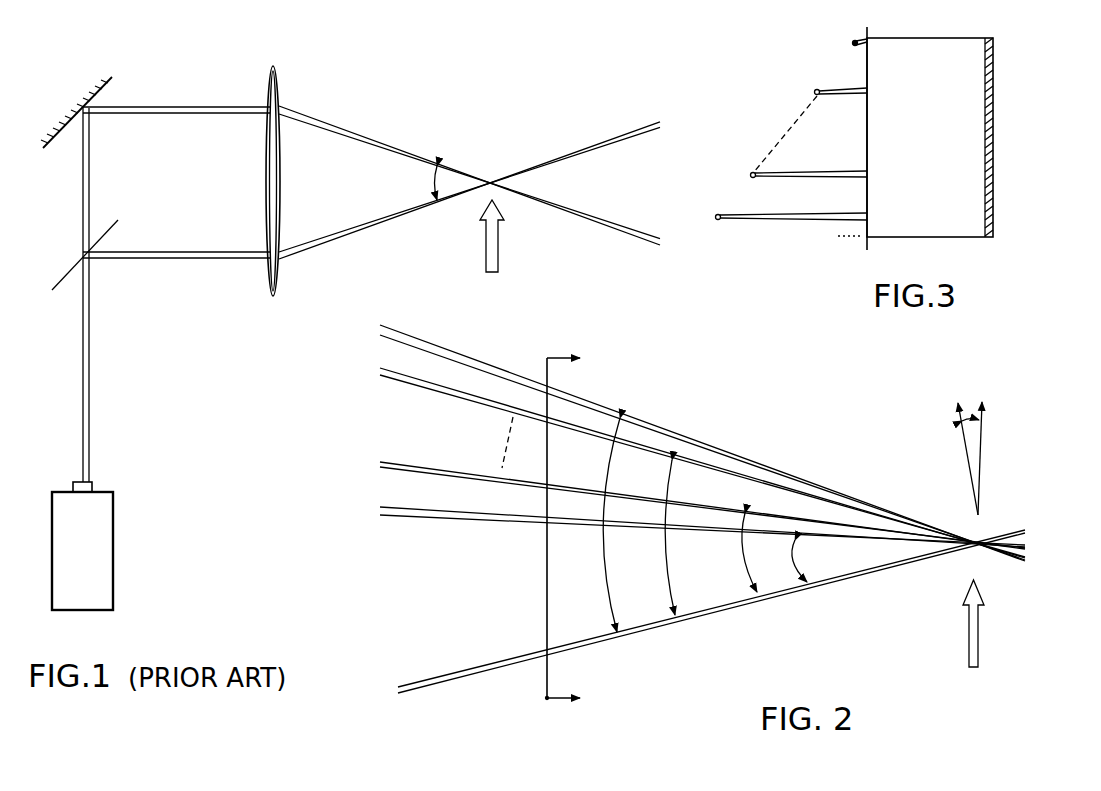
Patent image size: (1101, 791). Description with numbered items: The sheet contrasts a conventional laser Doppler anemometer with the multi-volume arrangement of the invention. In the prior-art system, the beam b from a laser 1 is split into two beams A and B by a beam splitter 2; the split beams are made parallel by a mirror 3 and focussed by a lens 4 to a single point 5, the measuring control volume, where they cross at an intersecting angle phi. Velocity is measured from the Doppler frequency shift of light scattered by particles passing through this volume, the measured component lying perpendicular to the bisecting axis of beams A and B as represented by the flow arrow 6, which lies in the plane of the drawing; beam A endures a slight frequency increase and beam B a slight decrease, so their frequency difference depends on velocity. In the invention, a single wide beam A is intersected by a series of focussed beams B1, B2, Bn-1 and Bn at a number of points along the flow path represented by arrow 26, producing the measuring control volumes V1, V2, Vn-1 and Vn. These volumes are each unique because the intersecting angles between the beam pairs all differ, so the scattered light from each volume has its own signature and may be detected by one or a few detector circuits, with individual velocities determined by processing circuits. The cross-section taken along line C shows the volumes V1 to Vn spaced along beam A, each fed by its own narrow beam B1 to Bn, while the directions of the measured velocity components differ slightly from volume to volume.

In FIG. 1, the laser 1 is at (113, 566).
In FIG. 1, the beam splitter 2 is at (104, 238).
In FIG. 1, the mirror 3 is at (108, 84).
In FIG. 1, the lens 4 is at (281, 112).
In FIG. 1, the measuring control volume 5 is at (490, 183).
In FIG. 1, the flow arrow 6 is at (498, 263).
In FIG. 2, the arrow 26 is at (978, 638).
In FIG. 1, the beam b is at (89, 356).
In FIG. 1, the beam A is at (198, 231).
In FIG. 3, the beam A is at (995, 138).
In FIG. 2, the beam A is at (436, 696).
In FIG. 1, the beam B is at (158, 113).
In FIG. 3, the beam B1 is at (849, 43).
In FIG. 2, the beam B1 is at (428, 522).
In FIG. 3, the beam B2 is at (811, 95).
In FIG. 2, the beam B2 is at (431, 477).
In FIG. 3, the beam Bn is at (713, 216).
In FIG. 2, the beam Bn is at (448, 347).
In FIG. 3, the beam Bn-1 is at (751, 174).
In FIG. 2, the beam Bn-1 is at (444, 394).
In FIG. 3, the measuring control volume V1 is at (870, 40).
In FIG. 3, the measuring control volume V2 is at (864, 87).
In FIG. 3, the measuring control volume Vn is at (858, 216).
In FIG. 3, the measuring control volume Vn-1 is at (864, 173).
In FIG. 2, the section line C— C is at (575, 531).
In FIG. 1, the intersecting angle phi is at (434, 184).